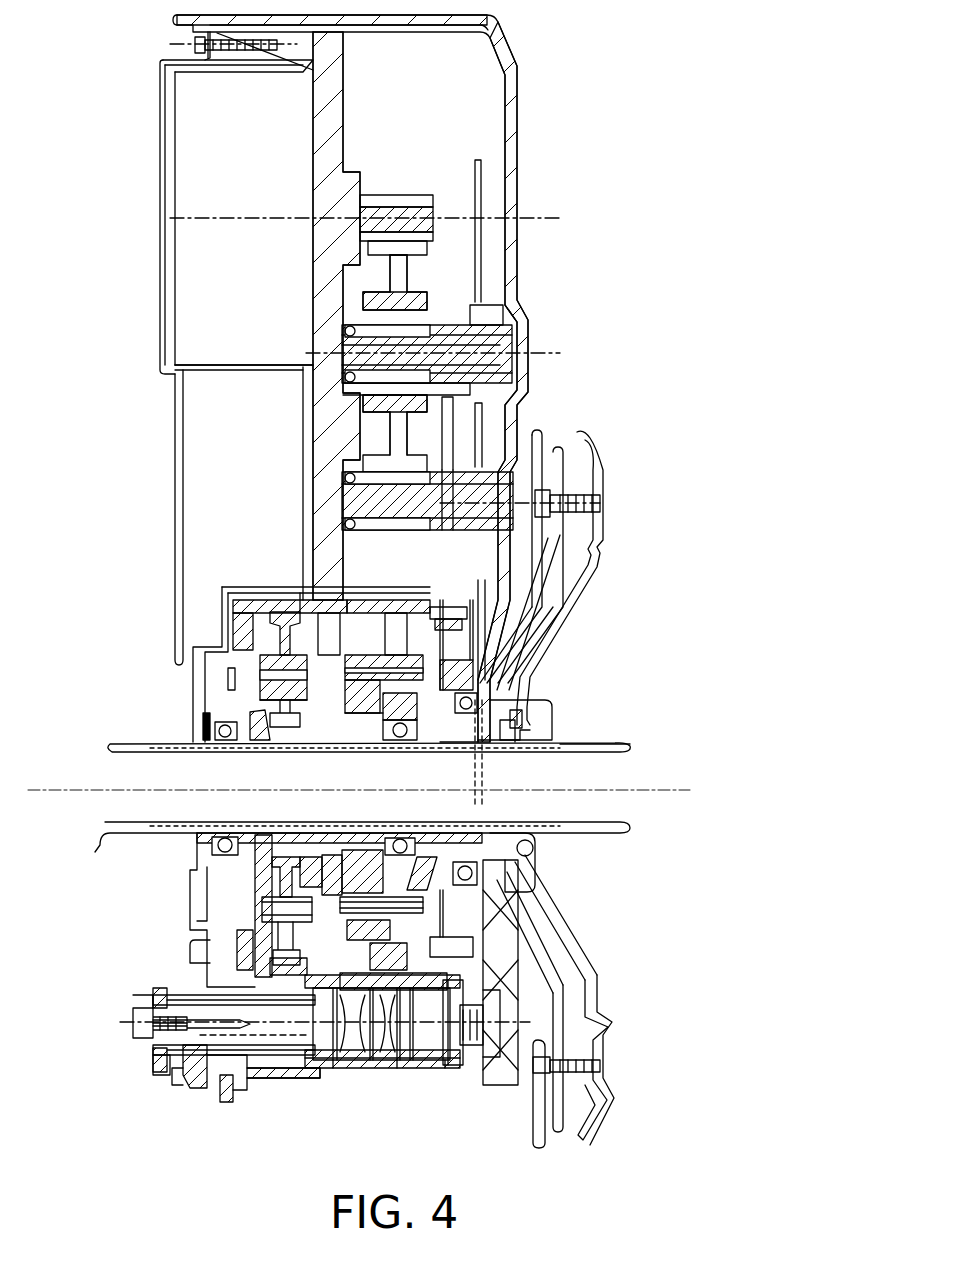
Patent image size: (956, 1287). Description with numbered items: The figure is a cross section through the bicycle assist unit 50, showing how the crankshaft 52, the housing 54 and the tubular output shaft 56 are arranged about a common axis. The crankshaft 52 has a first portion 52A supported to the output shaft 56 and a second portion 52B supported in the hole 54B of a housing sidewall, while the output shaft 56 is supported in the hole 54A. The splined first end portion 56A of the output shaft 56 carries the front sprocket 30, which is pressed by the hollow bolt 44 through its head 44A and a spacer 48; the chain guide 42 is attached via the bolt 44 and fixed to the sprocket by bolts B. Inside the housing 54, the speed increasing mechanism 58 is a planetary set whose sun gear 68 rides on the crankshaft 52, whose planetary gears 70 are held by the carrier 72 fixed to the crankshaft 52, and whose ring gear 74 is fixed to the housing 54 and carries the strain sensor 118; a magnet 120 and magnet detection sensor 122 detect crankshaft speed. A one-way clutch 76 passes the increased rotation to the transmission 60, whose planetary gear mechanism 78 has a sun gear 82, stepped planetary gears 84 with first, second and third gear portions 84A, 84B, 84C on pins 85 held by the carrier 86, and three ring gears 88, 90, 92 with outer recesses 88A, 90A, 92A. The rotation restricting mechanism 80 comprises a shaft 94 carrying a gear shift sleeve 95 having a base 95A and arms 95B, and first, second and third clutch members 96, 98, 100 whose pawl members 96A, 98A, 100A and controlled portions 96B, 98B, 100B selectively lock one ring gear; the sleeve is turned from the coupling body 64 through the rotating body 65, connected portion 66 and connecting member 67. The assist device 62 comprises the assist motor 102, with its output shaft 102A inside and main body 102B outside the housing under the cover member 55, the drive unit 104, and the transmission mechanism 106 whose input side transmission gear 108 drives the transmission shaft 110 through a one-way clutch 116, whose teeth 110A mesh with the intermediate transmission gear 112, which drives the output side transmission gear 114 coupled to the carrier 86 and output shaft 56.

The front sprocket 30 is at (521, 556).
The chain guide 42 is at (560, 578).
The hollow bolt 44 is at (535, 888).
The head 44A is at (540, 712).
The spacer 48 is at (535, 860).
The assist unit 50 is at (131, 1130).
The crankshaft 52 is at (100, 840).
The first portion 52A is at (472, 755).
The second portion 52B is at (225, 755).
The housing 54 is at (518, 118).
The hole 54A is at (528, 908).
The hole 54B is at (203, 735).
The cover member 55 is at (175, 530).
The output shaft 56 is at (520, 735).
The first end portion 56A is at (505, 748).
The speed increasing mechanism 58 is at (218, 885).
The transmission 60 is at (273, 1149).
The assist device 62 is at (421, 103).
The coupling body 64 is at (158, 1070).
The rotating body 65 is at (178, 1080).
The connected portion 66 is at (200, 1088).
The connecting member 67 is at (228, 1102).
The sun gear 68 is at (312, 857).
The planetary gears 70 is at (285, 857).
The carrier 72 is at (258, 850).
The ring gear 74 is at (237, 950).
The one-way clutch 76 is at (335, 855).
The planetary gear mechanism 78 is at (403, 577).
The rotation restricting mechanism 80 is at (86, 1087).
The sun gear 82 is at (358, 850).
The planetary gears 84 is at (385, 745).
The first gear portion 84A is at (345, 645).
The second gear portion 84B is at (228, 680).
The third gear portion 84C is at (440, 607).
The pin 85 is at (262, 918).
The carrier 86 is at (450, 850).
The first ring gear 88 is at (300, 600).
The recess 88A is at (300, 598).
The second ring gear 90 is at (313, 610).
The recess 90A is at (358, 612).
The third ring gear 92 is at (455, 645).
The recess 92A is at (520, 612).
The shaft 94 is at (133, 1020).
The gear shift sleeve 95 is at (312, 1070).
The base 95A is at (270, 1080).
The arms 95B is at (330, 1070).
The first clutch member 96 is at (318, 1005).
The pawl member 96A is at (325, 1035).
The controlled portion 96B is at (153, 995).
The second clutch member 98 is at (340, 1062).
The pawl member 98A is at (385, 1062).
The controlled portion 98B is at (262, 960).
The third clutch member 100 is at (425, 1062).
The pawl member 100A is at (478, 1060).
The controlled portion 100B is at (585, 985).
The assist motor 102 is at (160, 290).
The output shaft 102A is at (393, 195).
The main body 102B is at (215, 375).
The drive unit 104 is at (478, 160).
The transmission mechanism 106 is at (558, 324).
The input side transmission gear 108 is at (410, 275).
The transmission shaft 110 is at (512, 373).
The teeth 110A is at (495, 305).
The intermediate transmission gear 112 is at (482, 403).
The output side transmission gear 114 is at (525, 650).
The one-way clutch 116 is at (345, 390).
The sensor 118 is at (223, 600).
The magnet 120 is at (240, 742).
The magnet detection sensor 122 is at (250, 718).
The bolts B is at (603, 505).